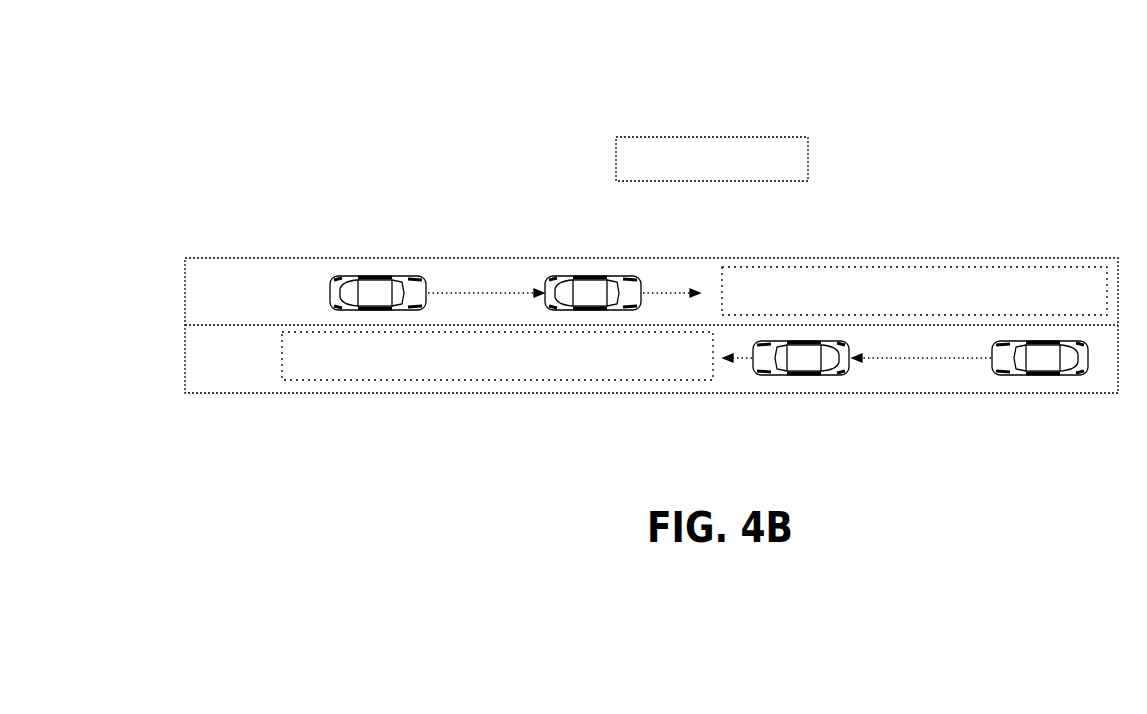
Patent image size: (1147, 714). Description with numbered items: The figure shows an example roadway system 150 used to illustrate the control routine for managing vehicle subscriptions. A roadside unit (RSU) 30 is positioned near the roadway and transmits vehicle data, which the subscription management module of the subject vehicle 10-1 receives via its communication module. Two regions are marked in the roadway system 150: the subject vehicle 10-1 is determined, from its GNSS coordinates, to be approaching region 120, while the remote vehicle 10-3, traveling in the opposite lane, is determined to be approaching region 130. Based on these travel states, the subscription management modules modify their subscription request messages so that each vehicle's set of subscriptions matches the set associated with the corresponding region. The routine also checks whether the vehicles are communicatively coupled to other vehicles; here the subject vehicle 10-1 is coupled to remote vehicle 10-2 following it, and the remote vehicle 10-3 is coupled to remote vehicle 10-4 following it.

The roadside unit (RSU) 30 is at (713, 137).
The roadway system 150 is at (915, 78).
The region 130 is at (990, 267).
The region 120 is at (535, 380).
The subject vehicle 10-1 is at (795, 376).
The remote vehicle 10-2 is at (1033, 376).
The remote vehicle 10-3 is at (594, 276).
The remote vehicle 10-4 is at (378, 276).